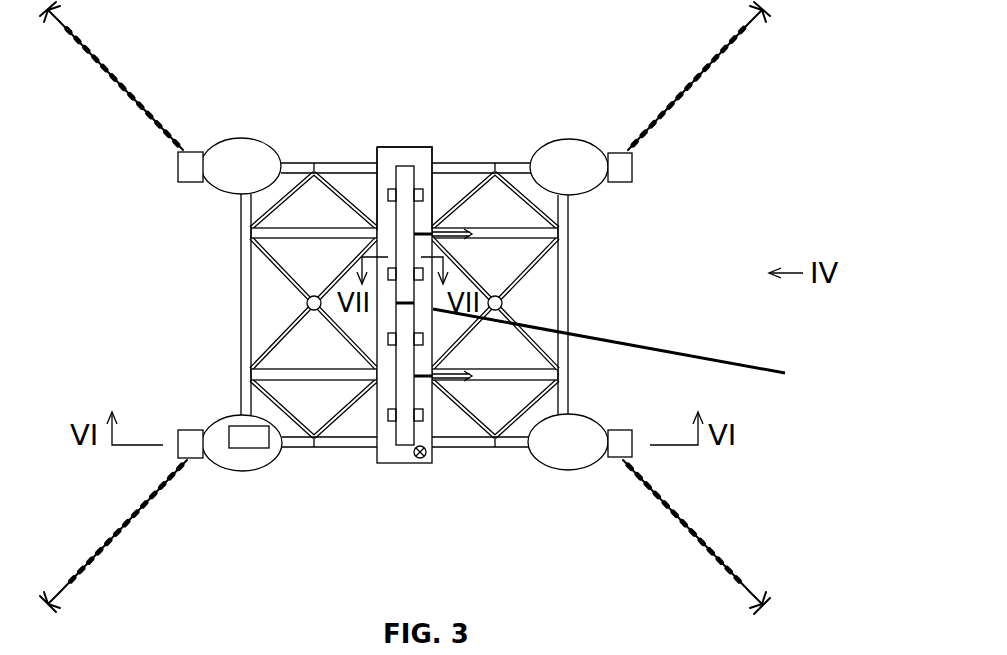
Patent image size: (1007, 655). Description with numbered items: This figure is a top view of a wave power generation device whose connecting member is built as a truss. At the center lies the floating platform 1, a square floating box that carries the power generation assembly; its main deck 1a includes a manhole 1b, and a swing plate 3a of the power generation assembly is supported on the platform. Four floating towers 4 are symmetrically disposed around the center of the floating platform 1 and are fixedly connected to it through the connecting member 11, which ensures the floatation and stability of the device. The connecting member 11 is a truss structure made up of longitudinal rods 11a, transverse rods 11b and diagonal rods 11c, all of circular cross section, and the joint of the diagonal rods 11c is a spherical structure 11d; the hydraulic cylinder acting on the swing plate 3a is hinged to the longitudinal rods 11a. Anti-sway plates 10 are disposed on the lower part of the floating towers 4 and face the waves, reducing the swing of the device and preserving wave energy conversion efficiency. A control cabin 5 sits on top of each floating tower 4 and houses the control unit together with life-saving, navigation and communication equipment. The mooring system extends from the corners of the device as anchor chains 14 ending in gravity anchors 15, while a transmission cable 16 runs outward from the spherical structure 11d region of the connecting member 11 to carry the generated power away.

The floating platform 1 is at (413, 311).
The main deck 1a is at (414, 157).
The manhole 1b is at (423, 458).
The swing plate 3a is at (402, 193).
The floating tower 4 is at (266, 133).
The control cabin 5 is at (236, 454).
The anti-sway plate 10 is at (618, 167).
The connecting member 11 is at (227, 318).
The longitudinal rod 11a is at (487, 235).
The transverse rod 11b is at (563, 308).
The diagonal rod 11c is at (530, 337).
The spherical structure 11d is at (503, 306).
The anchor chain 14 is at (683, 93).
The gravity anchor 15 is at (762, 588).
The transmission cable 16 is at (700, 353).